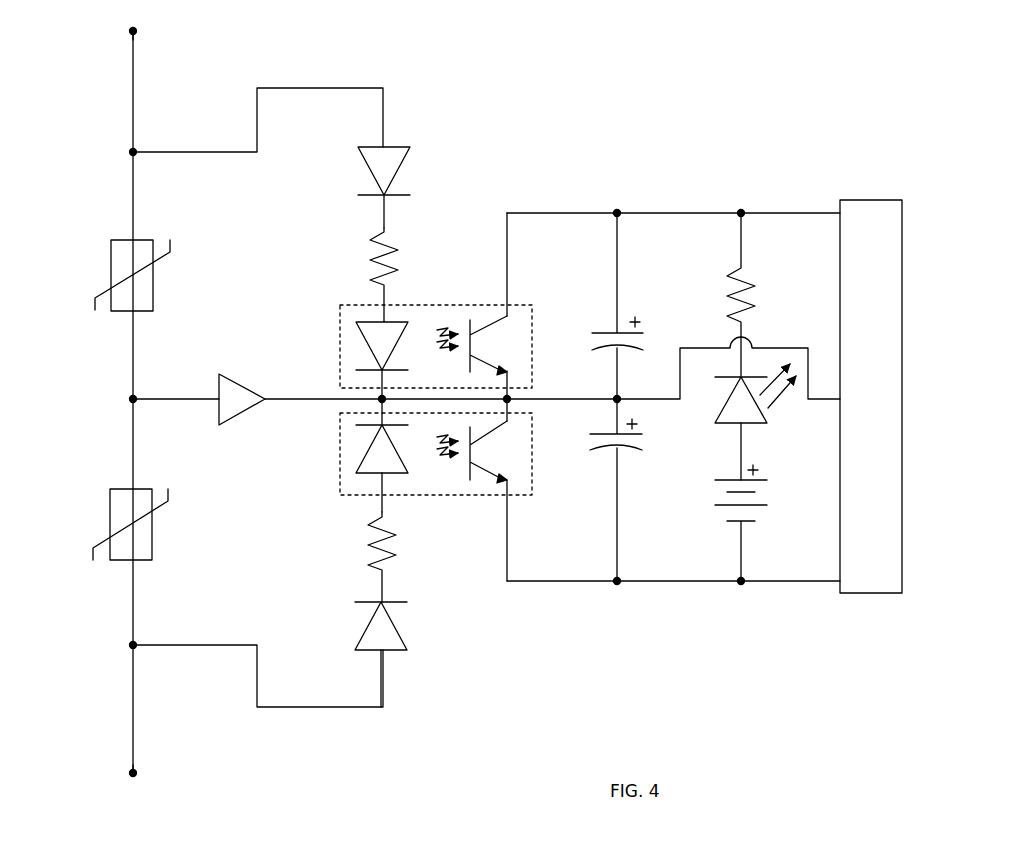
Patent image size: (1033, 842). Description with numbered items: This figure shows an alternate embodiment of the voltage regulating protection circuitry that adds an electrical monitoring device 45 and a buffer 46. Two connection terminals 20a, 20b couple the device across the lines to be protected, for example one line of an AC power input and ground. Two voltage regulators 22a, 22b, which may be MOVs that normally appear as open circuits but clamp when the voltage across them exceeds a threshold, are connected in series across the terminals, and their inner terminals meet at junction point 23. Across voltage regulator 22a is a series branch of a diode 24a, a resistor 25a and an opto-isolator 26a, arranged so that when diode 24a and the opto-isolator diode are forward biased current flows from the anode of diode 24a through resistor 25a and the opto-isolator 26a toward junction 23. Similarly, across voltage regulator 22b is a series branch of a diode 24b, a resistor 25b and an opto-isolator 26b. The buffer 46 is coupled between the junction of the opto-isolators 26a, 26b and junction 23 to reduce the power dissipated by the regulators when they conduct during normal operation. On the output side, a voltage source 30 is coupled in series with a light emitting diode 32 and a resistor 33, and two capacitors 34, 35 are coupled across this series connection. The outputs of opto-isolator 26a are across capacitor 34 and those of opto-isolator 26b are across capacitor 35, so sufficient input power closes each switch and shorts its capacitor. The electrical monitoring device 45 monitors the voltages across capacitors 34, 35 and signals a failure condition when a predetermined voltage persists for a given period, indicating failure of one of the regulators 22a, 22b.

The connection terminal 20a is at (133, 60).
The connection terminal 20b is at (133, 743).
The voltage regulator 22a is at (110, 258).
The voltage regulator 22b is at (110, 508).
The junction point 23 is at (133, 399).
The buffer 46 is at (236, 425).
The diode 24a is at (405, 162).
The diode 24b is at (397, 627).
The resistor 25a is at (398, 252).
The resistor 25b is at (396, 545).
The opto-isolator 26a is at (335, 326).
The opto-isolator 26b is at (335, 476).
The capacitor 34 is at (610, 333).
The capacitor 35 is at (632, 450).
The resistor 33 is at (752, 290).
The light emitting diode 32 is at (765, 420).
The voltage source 30 is at (750, 508).
The electrical monitoring device 45 is at (866, 200).